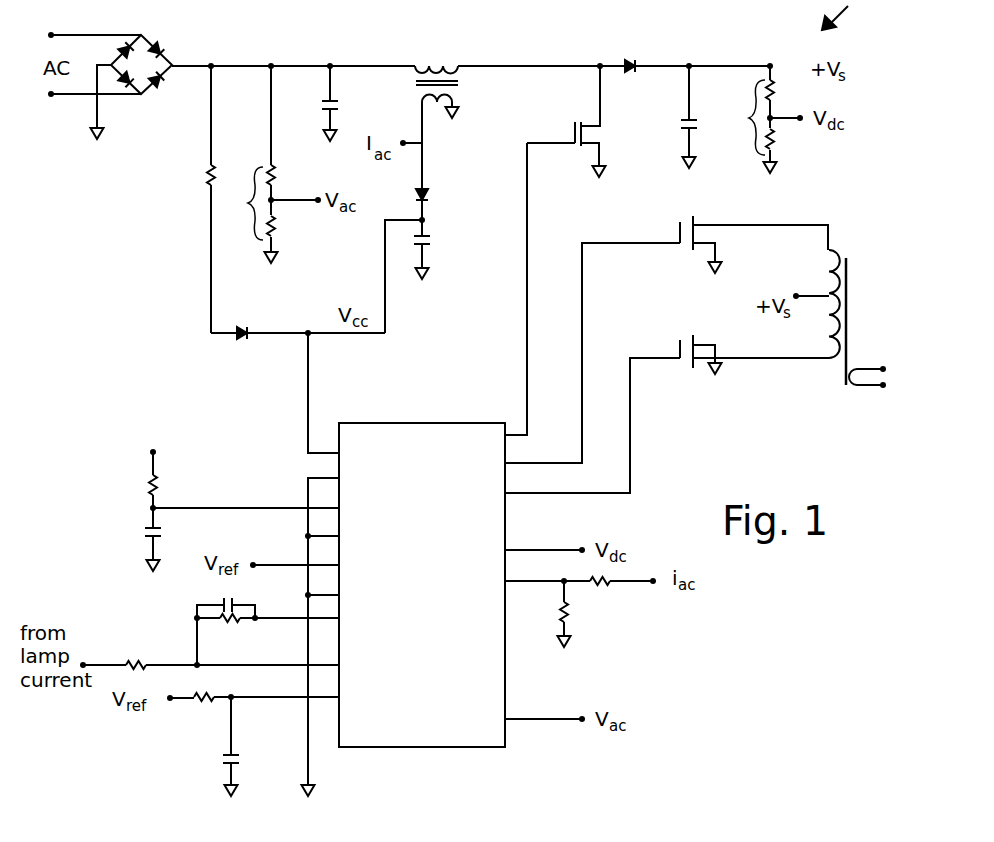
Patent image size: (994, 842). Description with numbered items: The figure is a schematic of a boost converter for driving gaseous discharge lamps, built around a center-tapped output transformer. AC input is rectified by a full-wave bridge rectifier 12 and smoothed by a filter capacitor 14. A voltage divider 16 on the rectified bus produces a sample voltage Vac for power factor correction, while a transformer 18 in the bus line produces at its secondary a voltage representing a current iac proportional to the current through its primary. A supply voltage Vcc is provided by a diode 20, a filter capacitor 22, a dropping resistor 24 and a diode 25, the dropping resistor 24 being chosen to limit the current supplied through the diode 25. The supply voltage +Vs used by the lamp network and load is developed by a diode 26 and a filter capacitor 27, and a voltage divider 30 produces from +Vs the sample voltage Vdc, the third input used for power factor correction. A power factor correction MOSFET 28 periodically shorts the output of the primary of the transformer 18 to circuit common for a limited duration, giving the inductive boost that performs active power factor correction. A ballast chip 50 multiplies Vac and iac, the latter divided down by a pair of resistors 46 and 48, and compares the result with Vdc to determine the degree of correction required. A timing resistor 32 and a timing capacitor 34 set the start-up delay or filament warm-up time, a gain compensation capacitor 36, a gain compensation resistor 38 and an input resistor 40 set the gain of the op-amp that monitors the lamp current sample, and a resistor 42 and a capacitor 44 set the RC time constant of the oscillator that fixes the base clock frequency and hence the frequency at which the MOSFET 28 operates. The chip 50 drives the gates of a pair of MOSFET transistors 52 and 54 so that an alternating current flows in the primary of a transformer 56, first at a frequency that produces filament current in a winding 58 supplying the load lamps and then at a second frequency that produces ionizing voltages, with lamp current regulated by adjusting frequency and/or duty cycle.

The full-wave bridge rectifier 12 is at (142, 26).
The filter capacitor 14 is at (338, 101).
The voltage divider 16 is at (271, 164).
The transformer 18 is at (425, 66).
The diode 20 is at (430, 190).
The filter capacitor 22 is at (425, 238).
The dropping resistor 24 is at (208, 178).
The diode 25 is at (242, 339).
The diode 26 is at (635, 47).
The filter capacitor 27 is at (675, 117).
The power factor correction MOSFET 28 is at (590, 150).
The voltage divider 30 is at (758, 119).
The timing resistor 32 is at (157, 483).
The timing capacitor 34 is at (158, 530).
The gain compensation capacitor 36 is at (236, 602).
The gain compensation resistor 38 is at (232, 625).
The input resistor 40 is at (141, 660).
The resistor 42 is at (201, 703).
The capacitor 44 is at (226, 763).
The resistor 46 is at (600, 586).
The resistor 48 is at (561, 605).
The ballast chip 50 is at (408, 423).
The MOSFET transistor 52 is at (680, 240).
The MOSFET transistor 54 is at (680, 356).
The transformer 56 is at (848, 265).
The winding 58 is at (860, 388).